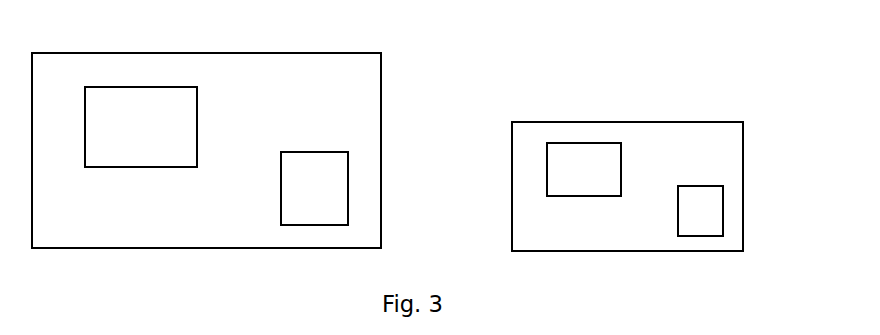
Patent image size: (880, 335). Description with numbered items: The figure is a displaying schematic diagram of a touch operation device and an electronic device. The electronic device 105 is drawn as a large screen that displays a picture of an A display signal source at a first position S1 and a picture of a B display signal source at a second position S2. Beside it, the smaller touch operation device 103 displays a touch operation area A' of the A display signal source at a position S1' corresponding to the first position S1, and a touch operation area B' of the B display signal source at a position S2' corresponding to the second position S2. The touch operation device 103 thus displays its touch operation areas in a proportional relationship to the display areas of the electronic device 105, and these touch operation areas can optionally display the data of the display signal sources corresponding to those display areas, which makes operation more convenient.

The electronic device 105 is at (206, 127).
The touch operation device 103 is at (638, 158).
The first position S1 is at (132, 121).
The second position S2 is at (309, 180).
The position corresponding to the first position S1' is at (575, 165).
The position corresponding to the second position S2' is at (693, 203).